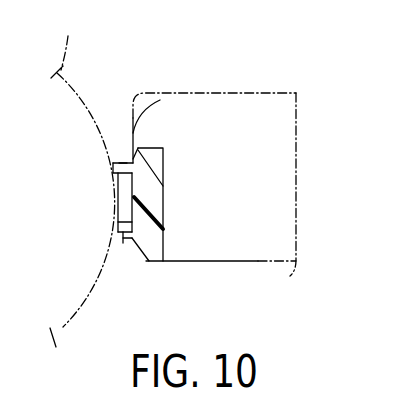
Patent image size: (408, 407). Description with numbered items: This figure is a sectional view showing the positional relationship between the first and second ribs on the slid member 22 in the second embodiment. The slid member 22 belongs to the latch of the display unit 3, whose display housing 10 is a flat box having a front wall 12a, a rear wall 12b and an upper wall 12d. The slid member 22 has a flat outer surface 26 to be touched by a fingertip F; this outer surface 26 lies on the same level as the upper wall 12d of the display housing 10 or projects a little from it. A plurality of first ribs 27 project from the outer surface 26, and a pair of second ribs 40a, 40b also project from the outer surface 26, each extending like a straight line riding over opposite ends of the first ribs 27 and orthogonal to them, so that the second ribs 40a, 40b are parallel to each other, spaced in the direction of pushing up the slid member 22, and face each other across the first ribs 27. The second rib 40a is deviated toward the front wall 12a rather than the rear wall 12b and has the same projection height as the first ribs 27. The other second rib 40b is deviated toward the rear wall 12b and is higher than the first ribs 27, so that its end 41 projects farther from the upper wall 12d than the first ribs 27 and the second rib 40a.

The display unit 3 is at (241, 179).
The display housing 10 is at (267, 222).
The front wall 12a is at (240, 261).
The rear wall 12b is at (219, 94).
The upper wall 12d is at (160, 104).
The slid member 22 is at (160, 188).
The outer surface 26 is at (118, 224).
The first ribs 27 is at (126, 199).
The second rib 40a is at (124, 243).
The second rib 40b is at (122, 163).
The end of the second rib 41 is at (113, 165).
The fingertip F is at (82, 179).